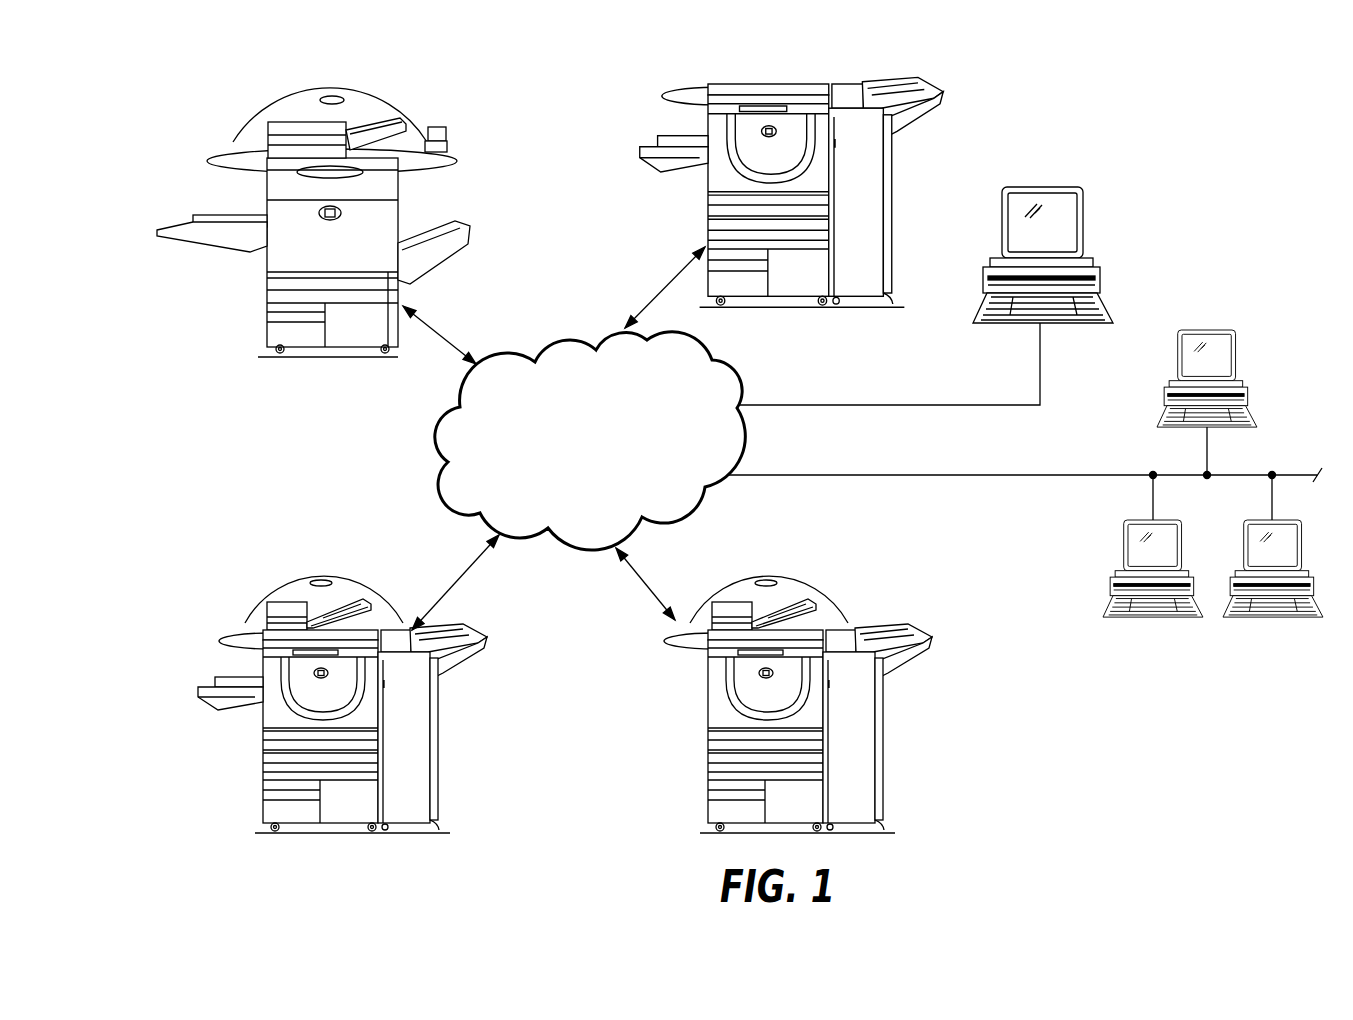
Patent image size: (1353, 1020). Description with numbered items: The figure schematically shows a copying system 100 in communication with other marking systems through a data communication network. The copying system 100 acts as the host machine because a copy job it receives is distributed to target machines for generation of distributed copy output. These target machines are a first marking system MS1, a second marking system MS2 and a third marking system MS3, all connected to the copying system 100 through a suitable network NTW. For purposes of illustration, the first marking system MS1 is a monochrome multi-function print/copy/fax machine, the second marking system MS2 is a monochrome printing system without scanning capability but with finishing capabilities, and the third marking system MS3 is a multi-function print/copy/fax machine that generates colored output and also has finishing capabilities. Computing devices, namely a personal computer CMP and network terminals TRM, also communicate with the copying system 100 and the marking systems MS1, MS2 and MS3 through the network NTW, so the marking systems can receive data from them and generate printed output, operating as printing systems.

The first marking system MS1 is at (262, 116).
The second marking system MS2 is at (735, 85).
The third marking system MS3 is at (742, 578).
The copying system 100 is at (262, 596).
The network NTW is at (587, 551).
The personal computer CMP is at (1077, 186).
The network terminals TRM is at (1208, 331).